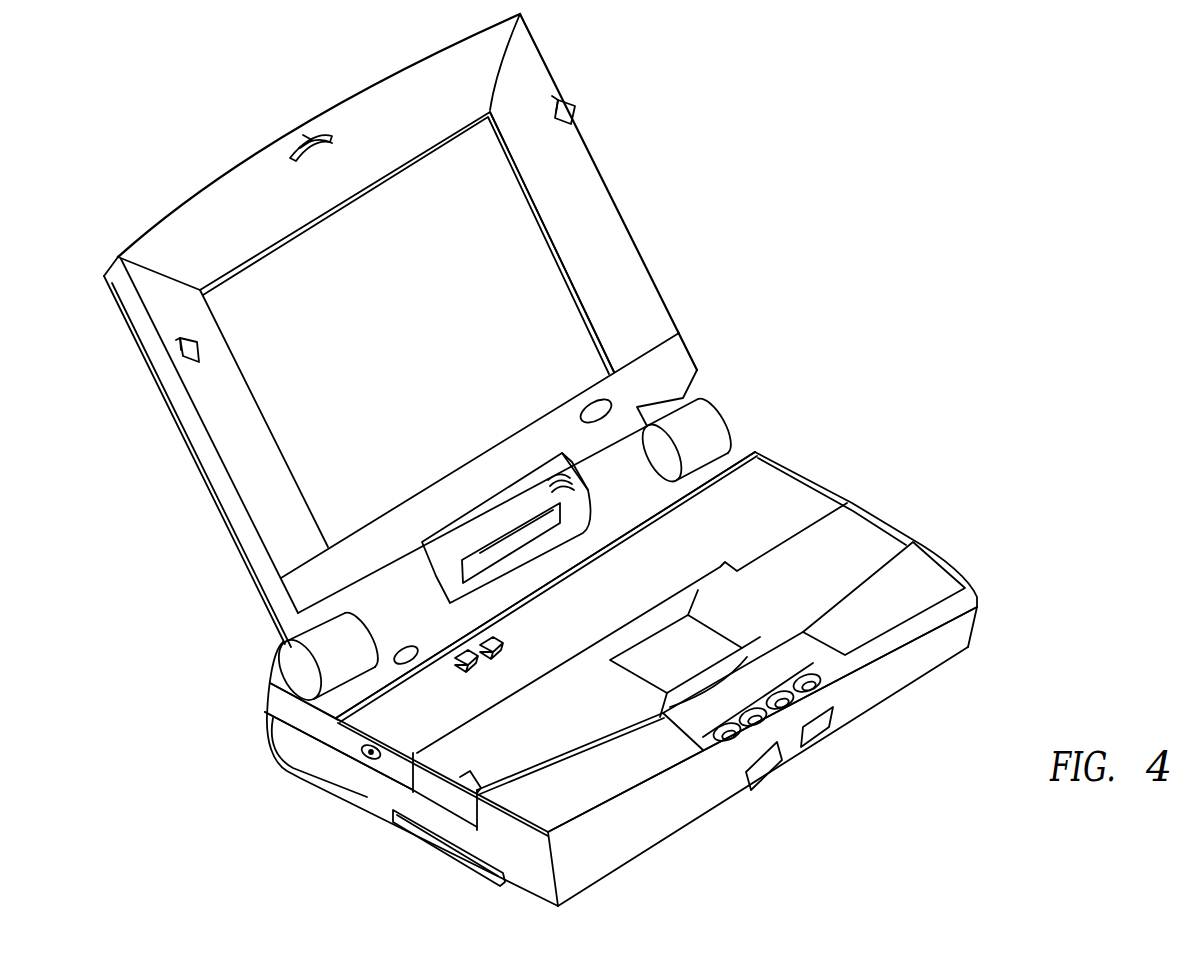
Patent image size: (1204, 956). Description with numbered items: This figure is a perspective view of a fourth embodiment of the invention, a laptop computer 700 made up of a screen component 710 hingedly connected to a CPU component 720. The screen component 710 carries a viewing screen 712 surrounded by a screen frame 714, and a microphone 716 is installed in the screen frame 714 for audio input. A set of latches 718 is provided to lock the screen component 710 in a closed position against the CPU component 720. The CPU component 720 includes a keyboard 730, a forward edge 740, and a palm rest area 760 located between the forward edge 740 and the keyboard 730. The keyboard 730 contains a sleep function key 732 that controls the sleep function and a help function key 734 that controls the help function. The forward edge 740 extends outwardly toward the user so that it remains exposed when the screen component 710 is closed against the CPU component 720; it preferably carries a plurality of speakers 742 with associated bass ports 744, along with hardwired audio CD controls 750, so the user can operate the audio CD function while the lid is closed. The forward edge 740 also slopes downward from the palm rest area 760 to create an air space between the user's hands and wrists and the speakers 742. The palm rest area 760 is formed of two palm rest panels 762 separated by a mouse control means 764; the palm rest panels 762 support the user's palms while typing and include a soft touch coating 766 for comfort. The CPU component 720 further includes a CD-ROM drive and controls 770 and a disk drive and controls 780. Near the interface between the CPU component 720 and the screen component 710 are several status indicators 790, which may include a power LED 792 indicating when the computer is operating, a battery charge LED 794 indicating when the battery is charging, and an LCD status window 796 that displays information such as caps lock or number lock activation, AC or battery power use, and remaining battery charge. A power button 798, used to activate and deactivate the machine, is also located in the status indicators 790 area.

The laptop computer 700 is at (878, 195).
The screen component 710 is at (633, 174).
The viewing screen 712 is at (435, 337).
The screen frame 714 is at (609, 254).
The microphone 716 is at (292, 152).
The latches 718 is at (566, 122).
The CPU component 720 is at (820, 470).
The keyboard 730 is at (732, 534).
The sleep function key 732 is at (457, 663).
The help function key 734 is at (610, 660).
The forward edge 740 is at (677, 834).
The speakers 742 is at (882, 626).
The bass ports 744 is at (813, 737).
The hardwired audio CD controls 750 is at (755, 693).
The palm rest area 760 is at (855, 482).
The palm rest panels 762 is at (819, 591).
The mouse control means 764 is at (700, 669).
The soft touch coating 766 is at (777, 568).
The CD-ROM drive and controls 770 is at (337, 777).
The disk drive and controls 780 is at (445, 853).
The status indicators 790 is at (497, 503).
The power LED 792 is at (550, 482).
The battery charge LED 794 is at (557, 487).
The LCD status window 796 is at (485, 560).
The power button 798 is at (403, 648).